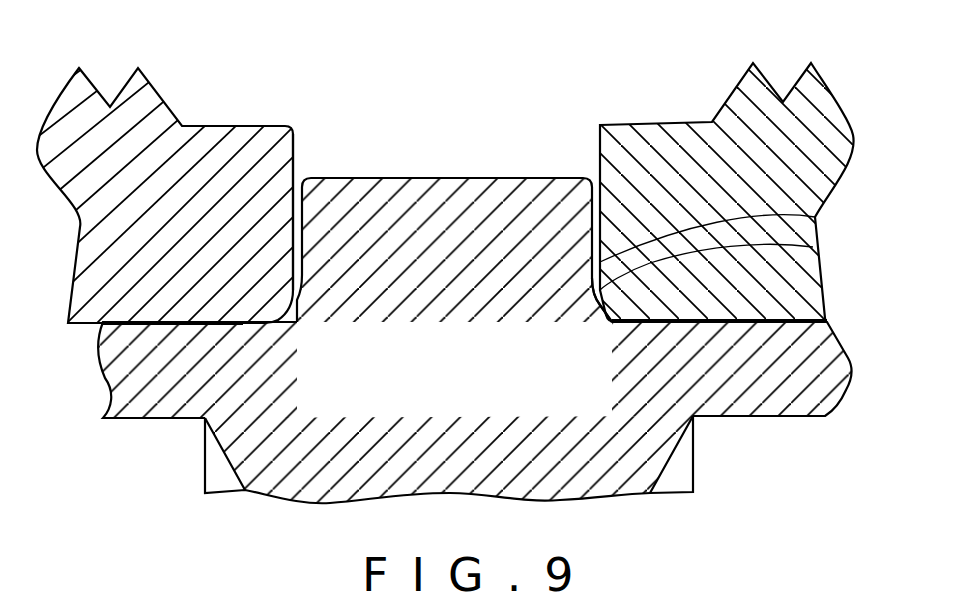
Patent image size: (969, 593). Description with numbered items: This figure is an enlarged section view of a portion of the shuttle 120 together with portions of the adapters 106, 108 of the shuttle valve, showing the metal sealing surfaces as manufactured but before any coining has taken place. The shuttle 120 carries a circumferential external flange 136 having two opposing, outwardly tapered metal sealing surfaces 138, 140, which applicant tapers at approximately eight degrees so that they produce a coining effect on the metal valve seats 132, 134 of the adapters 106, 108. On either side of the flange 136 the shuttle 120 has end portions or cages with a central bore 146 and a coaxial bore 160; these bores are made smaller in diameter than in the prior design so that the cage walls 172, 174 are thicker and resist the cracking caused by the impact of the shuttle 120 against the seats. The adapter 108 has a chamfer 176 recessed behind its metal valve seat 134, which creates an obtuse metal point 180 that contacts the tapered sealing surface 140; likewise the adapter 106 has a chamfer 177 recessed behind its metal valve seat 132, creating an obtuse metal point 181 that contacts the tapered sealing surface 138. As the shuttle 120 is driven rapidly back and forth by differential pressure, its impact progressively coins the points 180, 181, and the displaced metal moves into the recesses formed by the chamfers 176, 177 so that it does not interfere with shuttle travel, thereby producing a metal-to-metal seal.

The adapter 106 is at (97, 143).
The adapter 108 is at (683, 138).
The shuttle 120 is at (347, 447).
The metal valve seat 132 is at (298, 140).
The metal valve seat 134 is at (815, 217).
The circumferential external flange 136 is at (358, 178).
The tapered metal sealing surface 138 is at (290, 316).
The tapered metal sealing surface 140 is at (605, 307).
The central bore 146 is at (172, 480).
The bore 160 is at (765, 473).
The cage wall 172 is at (143, 355).
The cage wall 174 is at (830, 371).
The chamfer 176 is at (625, 312).
The chamfer 177 is at (245, 323).
The obtuse metal point 180 is at (813, 247).
The obtuse metal point 181 is at (295, 295).